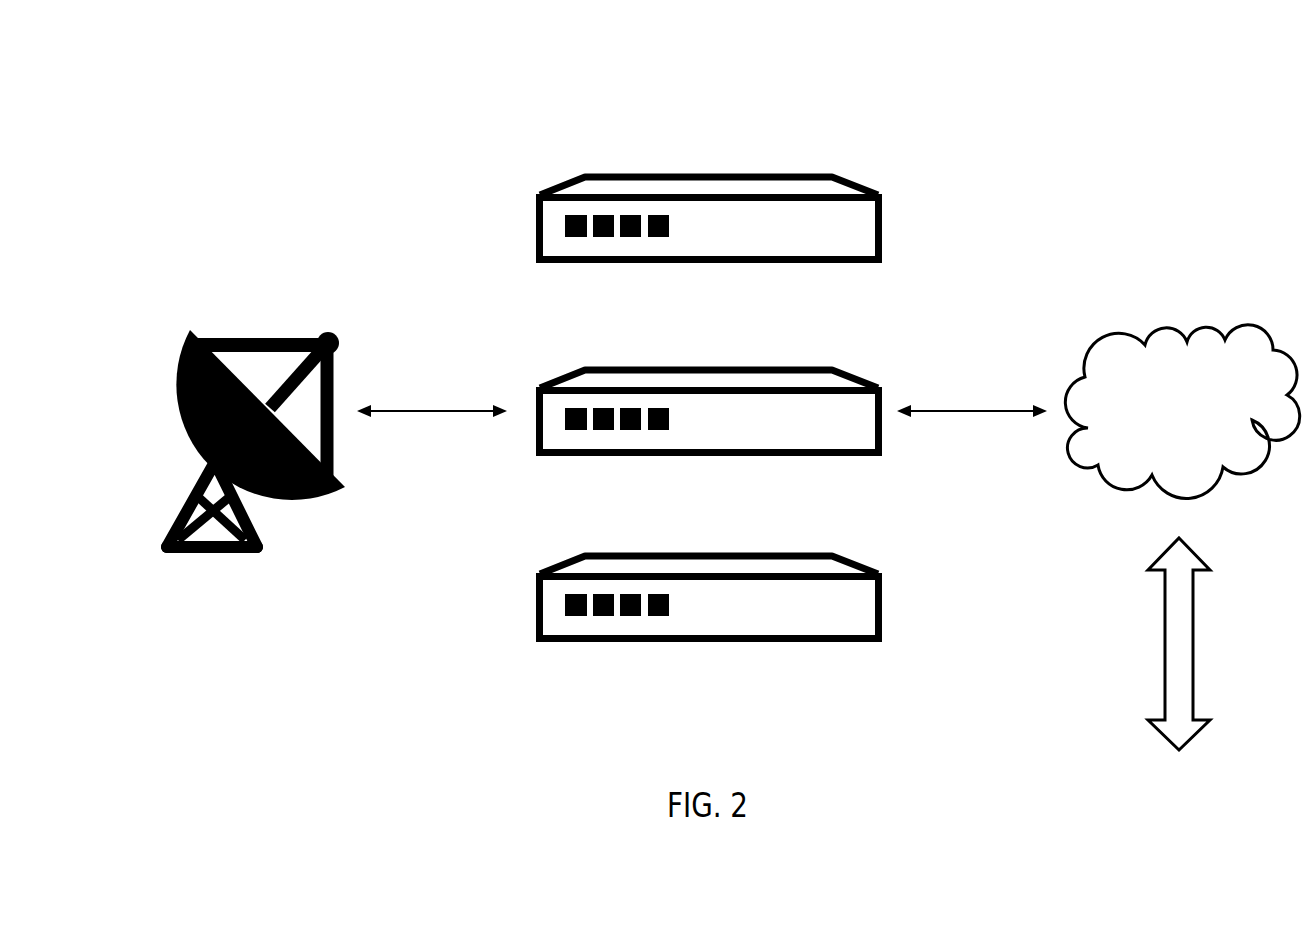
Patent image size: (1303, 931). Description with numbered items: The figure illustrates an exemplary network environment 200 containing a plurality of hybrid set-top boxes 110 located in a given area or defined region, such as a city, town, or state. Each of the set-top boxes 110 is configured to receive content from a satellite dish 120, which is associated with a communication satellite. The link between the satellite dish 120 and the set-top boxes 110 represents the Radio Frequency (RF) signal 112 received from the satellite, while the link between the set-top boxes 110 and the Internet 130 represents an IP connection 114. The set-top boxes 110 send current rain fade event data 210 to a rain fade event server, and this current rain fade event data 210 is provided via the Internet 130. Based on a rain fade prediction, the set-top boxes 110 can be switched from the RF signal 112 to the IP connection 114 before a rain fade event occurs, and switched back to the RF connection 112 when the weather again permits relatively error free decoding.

The network environment 200 is at (1192, 84).
The set-top box 110 is at (520, 184).
The satellite dish 120 is at (254, 316).
The Radio Frequency (RF) signal 112 is at (439, 466).
The IP connection 114 is at (973, 466).
The Internet 130 is at (1183, 301).
The current rain fade event data 210 is at (1134, 644).